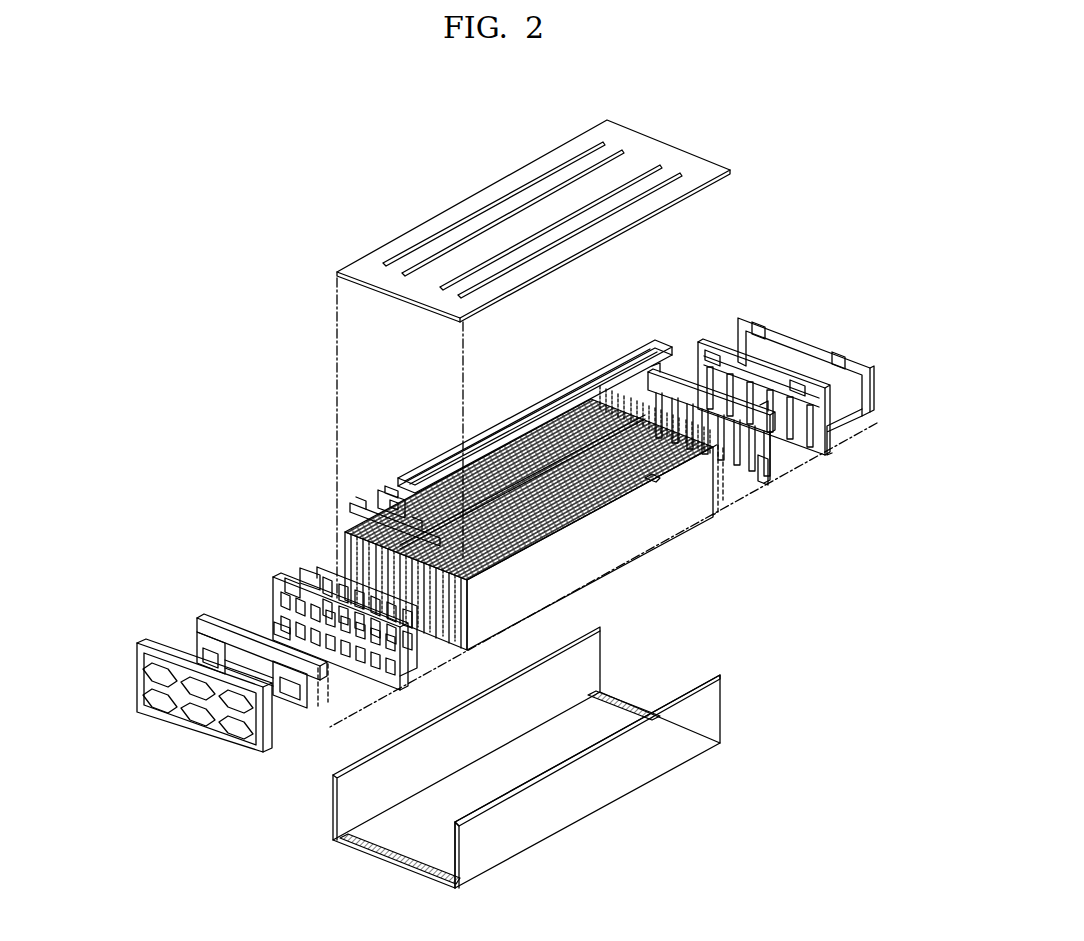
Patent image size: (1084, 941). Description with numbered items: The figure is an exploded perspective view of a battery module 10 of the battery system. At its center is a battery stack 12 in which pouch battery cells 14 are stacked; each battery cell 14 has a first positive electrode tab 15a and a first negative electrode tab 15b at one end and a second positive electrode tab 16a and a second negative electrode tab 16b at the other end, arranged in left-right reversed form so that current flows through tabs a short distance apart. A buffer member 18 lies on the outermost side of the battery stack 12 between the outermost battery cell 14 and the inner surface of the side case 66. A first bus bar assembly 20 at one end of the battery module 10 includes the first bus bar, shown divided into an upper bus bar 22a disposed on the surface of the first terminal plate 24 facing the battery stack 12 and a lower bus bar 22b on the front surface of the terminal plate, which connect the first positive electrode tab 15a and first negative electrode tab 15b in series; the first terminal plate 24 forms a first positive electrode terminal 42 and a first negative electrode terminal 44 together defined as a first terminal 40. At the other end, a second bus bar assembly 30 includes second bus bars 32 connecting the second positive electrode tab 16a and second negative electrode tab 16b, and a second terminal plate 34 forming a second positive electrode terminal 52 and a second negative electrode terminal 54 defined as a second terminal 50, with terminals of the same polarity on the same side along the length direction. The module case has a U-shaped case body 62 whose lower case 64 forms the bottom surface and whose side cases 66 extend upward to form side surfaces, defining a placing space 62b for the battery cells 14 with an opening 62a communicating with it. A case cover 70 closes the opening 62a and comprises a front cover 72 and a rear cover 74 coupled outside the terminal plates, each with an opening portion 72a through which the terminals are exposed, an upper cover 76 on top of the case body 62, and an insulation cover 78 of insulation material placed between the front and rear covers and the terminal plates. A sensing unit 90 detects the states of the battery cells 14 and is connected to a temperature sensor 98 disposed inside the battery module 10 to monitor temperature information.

The battery module 10 is at (228, 406).
The battery stack 12 is at (658, 545).
The battery cell 14 is at (647, 478).
The first positive electrode tab 15a is at (470, 607).
The first negative electrode tab 15b is at (463, 650).
The second positive electrode tab 16a is at (717, 500).
The second negative electrode tab 16b is at (728, 465).
The buffer member 18 is at (605, 560).
The first bus bar assembly 20 is at (278, 585).
The upper bus bar 22a is at (312, 578).
The lower bus bar 22b is at (273, 628).
The first terminal plate 24 is at (305, 583).
The second bus bar assembly 30 is at (778, 463).
The second bus bar 32 is at (768, 478).
The second terminal plate 34 is at (720, 397).
The first terminal 40 is at (303, 633).
The first positive electrode terminal 42 is at (392, 690).
The first negative electrode terminal 44 is at (273, 592).
The second terminal 50 is at (738, 384).
The second positive electrode terminal 52 is at (763, 413).
The second negative electrode terminal 54 is at (673, 377).
The case body 62 is at (650, 787).
The opening 62a is at (577, 753).
The placing space 62b is at (475, 787).
The lower case 64 is at (604, 720).
The side case 66 is at (690, 740).
The case cover 70 is at (501, 456).
The front cover 72 is at (232, 748).
The opening portion 72a is at (145, 668).
The rear cover 74 is at (877, 380).
The upper cover 76 is at (450, 218).
The insulation cover 78 is at (200, 622).
The sensing unit 90 is at (373, 507).
The temperature sensor 98 is at (527, 412).